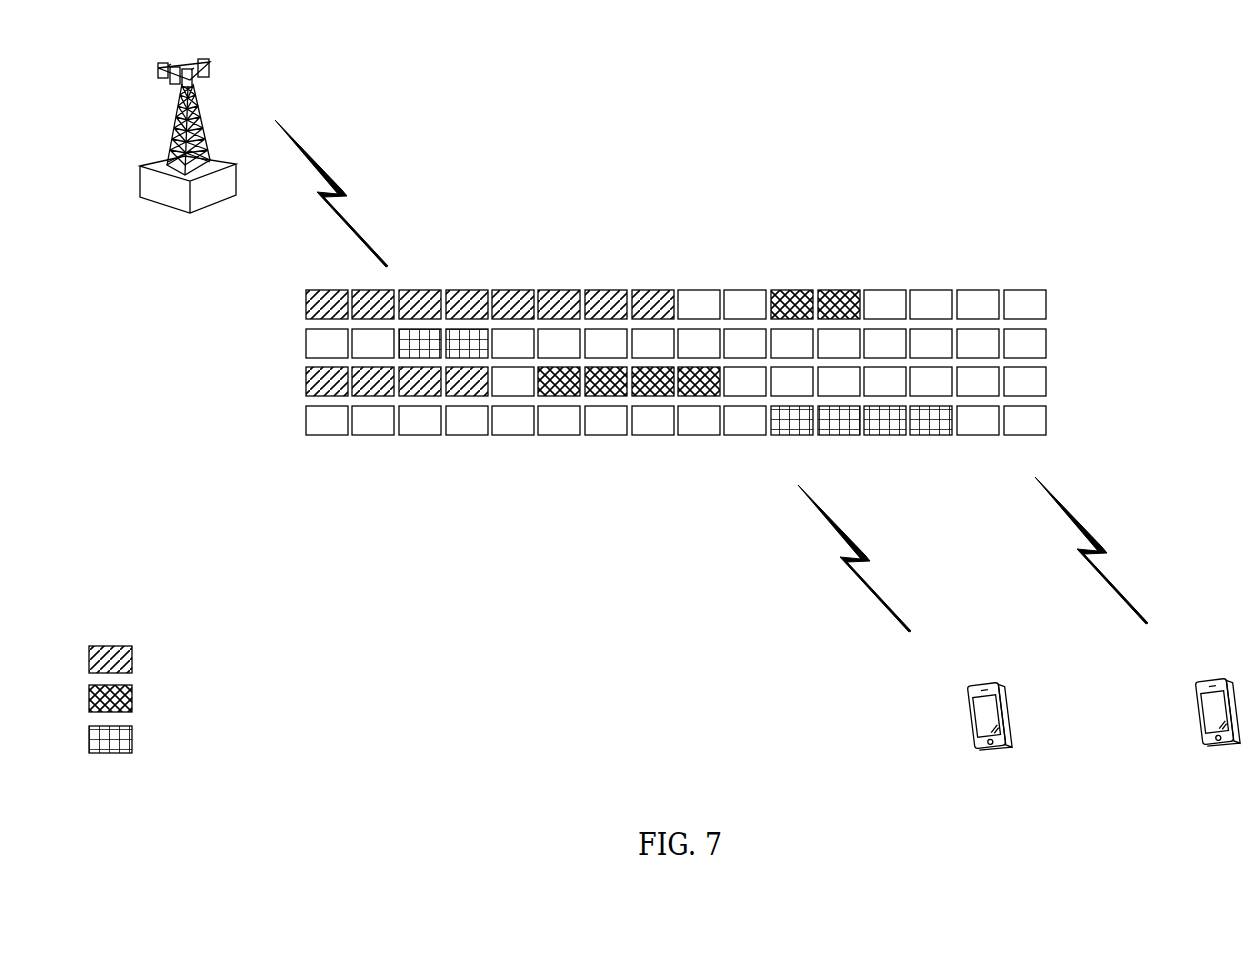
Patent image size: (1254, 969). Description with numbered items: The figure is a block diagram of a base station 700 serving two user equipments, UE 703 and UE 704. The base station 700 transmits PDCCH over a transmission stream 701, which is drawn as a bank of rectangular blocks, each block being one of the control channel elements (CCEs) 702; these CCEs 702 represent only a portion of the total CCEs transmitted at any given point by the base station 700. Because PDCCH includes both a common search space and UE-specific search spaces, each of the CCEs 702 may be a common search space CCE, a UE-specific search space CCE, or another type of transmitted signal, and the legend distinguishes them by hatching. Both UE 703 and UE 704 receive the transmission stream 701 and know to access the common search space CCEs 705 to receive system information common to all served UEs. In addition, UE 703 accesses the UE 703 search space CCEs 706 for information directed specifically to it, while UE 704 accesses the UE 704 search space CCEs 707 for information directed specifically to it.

The base station 700 is at (165, 208).
The transmission stream 701 is at (742, 365).
The control channel elements (CCEs) 702 is at (648, 291).
The UE 703 is at (970, 698).
The UE 704 is at (1198, 692).
The common search space CCEs 705 is at (287, 659).
The UE 703 search space CCEs 706 is at (278, 697).
The UE 704 search space CCEs 707 is at (278, 739).